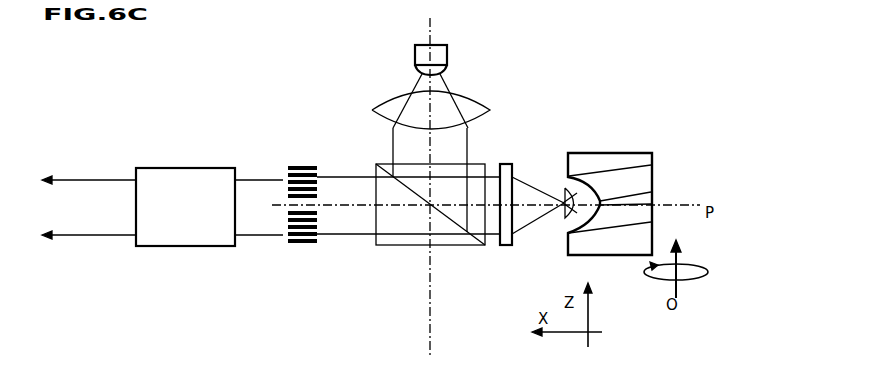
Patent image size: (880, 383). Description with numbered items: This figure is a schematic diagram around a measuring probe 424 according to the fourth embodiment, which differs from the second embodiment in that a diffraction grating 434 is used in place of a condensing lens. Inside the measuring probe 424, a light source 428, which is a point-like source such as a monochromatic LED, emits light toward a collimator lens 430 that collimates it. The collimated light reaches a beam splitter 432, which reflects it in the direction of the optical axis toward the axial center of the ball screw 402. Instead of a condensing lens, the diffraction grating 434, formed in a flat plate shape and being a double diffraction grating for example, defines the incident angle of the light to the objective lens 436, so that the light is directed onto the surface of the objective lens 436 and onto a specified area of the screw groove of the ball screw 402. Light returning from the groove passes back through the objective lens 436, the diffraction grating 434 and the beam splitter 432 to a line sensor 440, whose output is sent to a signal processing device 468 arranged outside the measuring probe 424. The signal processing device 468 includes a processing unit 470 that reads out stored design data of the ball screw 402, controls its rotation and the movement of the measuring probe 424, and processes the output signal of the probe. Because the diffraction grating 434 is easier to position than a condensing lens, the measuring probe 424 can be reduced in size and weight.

The ball screw 402 is at (620, 163).
The measuring probe 424 is at (333, 55).
The light source 428 is at (447, 49).
The collimator lens 430 is at (470, 109).
The beam splitter 432 is at (471, 175).
The diffraction grating 434 is at (514, 162).
The objective lens 436 is at (563, 219).
The line sensor 440 is at (292, 138).
The signal processing device 468 is at (140, 126).
The processing unit 470 is at (162, 207).